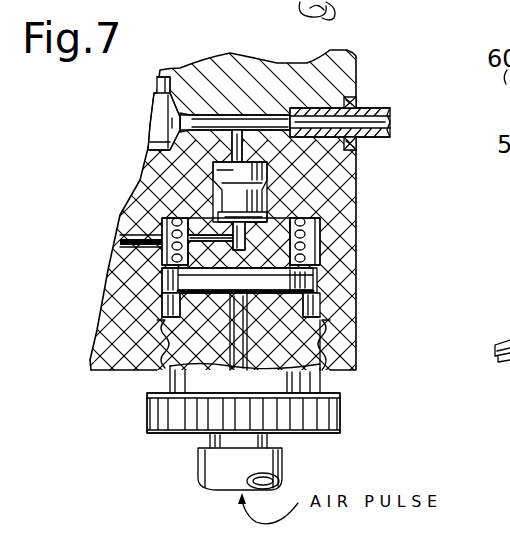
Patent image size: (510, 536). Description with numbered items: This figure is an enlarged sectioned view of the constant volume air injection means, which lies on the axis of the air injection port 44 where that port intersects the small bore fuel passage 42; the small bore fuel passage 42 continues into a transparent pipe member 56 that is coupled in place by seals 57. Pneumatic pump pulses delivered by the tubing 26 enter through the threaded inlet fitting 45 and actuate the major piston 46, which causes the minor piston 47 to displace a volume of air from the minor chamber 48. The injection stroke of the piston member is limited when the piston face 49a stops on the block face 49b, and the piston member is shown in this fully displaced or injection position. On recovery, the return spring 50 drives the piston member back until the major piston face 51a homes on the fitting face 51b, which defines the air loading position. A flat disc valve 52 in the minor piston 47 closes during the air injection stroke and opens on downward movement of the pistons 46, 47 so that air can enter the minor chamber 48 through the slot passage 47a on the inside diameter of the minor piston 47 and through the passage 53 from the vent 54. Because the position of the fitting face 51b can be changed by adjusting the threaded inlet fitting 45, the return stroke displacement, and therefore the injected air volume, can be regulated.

The small bore fuel passage 42 is at (210, 118).
The seals 57 is at (356, 97).
The transparent pipe member 56 is at (362, 108).
The minor piston 47 is at (265, 183).
The slot passage 47a is at (278, 184).
The air injection port 44 is at (235, 143).
The minor chamber 48 is at (213, 166).
The piston face 49a is at (283, 247).
The block face 49b is at (268, 202).
The flat disc valve 52 is at (140, 233).
The passage 53 is at (235, 268).
The vent 54 is at (150, 273).
The return spring 50 is at (162, 222).
The major piston face 51a is at (320, 335).
The fitting face 51b is at (163, 292).
The major piston 46 is at (335, 290).
The inlet fitting 45 is at (330, 435).
The tubing 26 is at (198, 468).